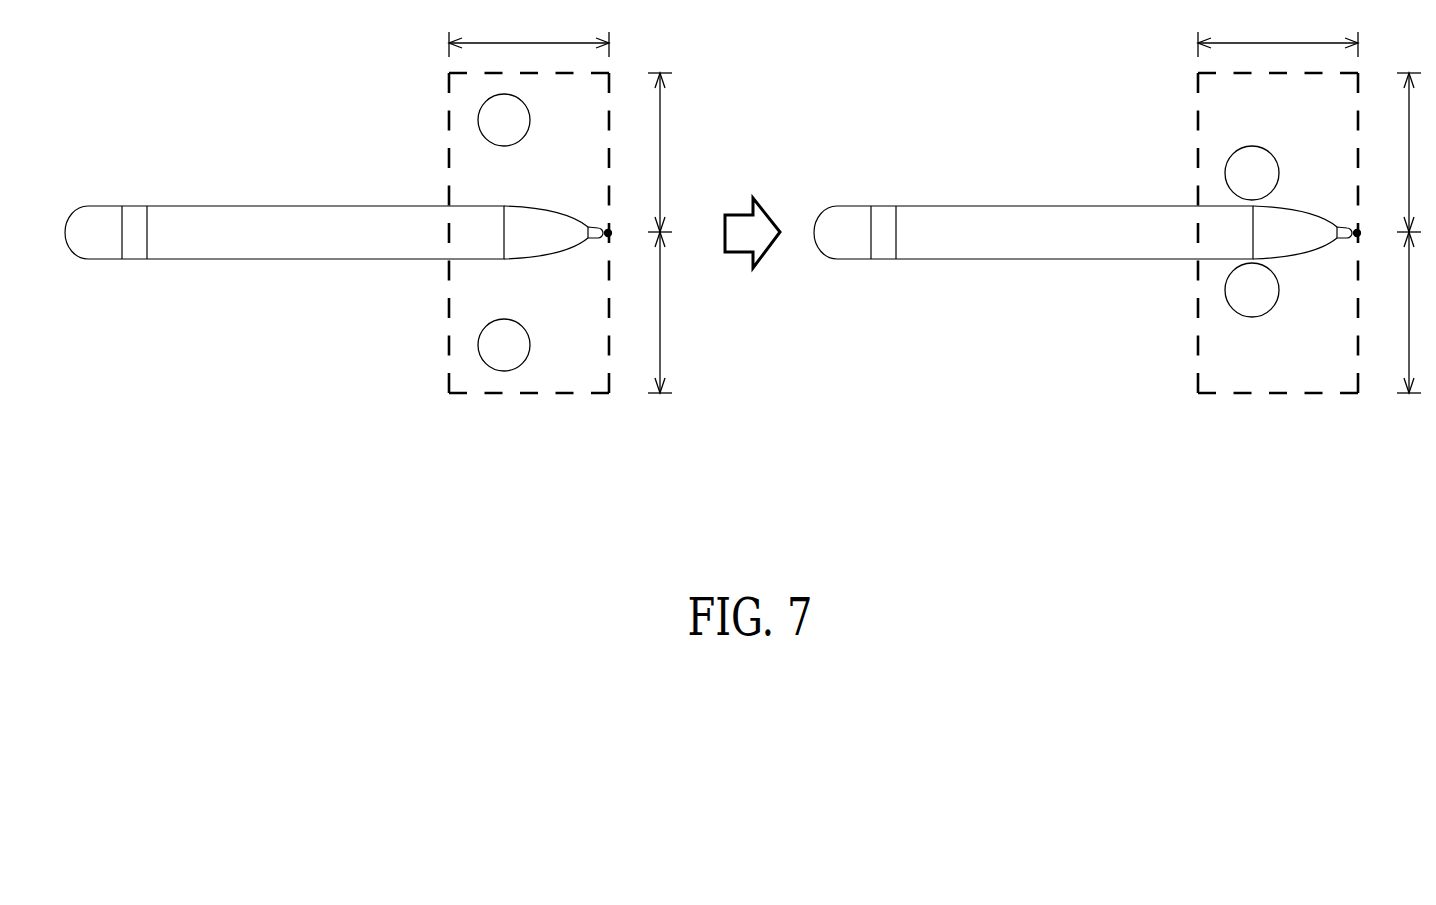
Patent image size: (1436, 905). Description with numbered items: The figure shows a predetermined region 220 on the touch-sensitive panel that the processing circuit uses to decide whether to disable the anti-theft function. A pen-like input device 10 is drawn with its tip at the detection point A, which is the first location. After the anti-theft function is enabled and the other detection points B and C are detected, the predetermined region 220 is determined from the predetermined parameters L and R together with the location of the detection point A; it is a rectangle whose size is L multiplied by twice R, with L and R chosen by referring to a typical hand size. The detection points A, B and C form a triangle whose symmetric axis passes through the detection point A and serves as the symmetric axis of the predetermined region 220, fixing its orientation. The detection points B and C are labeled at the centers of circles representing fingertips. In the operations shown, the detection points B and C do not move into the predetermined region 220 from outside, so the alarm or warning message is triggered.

The input device 10 is at (245, 222).
The predetermined region 220 is at (527, 393).
The detection point A is at (996, 233).
The detection point B is at (878, 147).
The detection point C is at (878, 317).
The predetermined parameter L is at (903, 33).
The predetermined parameter R is at (1042, 233).